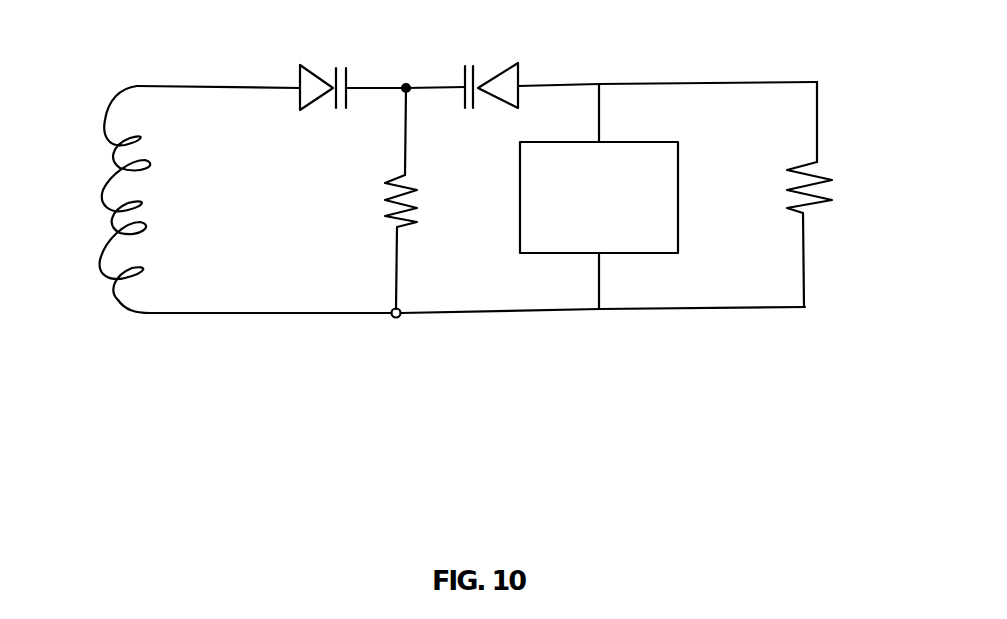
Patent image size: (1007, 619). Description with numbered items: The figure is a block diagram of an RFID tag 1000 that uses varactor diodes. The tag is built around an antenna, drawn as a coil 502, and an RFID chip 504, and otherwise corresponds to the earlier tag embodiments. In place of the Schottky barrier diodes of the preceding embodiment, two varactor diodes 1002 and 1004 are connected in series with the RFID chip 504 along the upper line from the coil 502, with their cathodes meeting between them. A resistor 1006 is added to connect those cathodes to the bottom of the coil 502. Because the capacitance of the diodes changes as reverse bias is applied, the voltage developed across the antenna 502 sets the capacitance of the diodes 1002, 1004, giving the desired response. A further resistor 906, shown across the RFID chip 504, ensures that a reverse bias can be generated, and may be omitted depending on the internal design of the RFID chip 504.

The antenna 502 is at (100, 200).
The RFID chip 504 is at (520, 197).
The varactor diode 1002 is at (302, 66).
The varactor diode 1004 is at (498, 65).
The resistor 1006 is at (385, 200).
The resistor R1 906 is at (818, 185).
The RFID tag 1000 is at (767, 400).